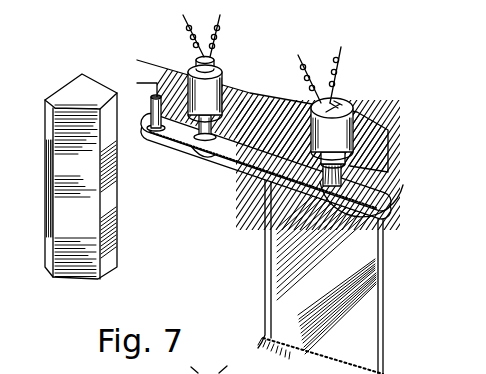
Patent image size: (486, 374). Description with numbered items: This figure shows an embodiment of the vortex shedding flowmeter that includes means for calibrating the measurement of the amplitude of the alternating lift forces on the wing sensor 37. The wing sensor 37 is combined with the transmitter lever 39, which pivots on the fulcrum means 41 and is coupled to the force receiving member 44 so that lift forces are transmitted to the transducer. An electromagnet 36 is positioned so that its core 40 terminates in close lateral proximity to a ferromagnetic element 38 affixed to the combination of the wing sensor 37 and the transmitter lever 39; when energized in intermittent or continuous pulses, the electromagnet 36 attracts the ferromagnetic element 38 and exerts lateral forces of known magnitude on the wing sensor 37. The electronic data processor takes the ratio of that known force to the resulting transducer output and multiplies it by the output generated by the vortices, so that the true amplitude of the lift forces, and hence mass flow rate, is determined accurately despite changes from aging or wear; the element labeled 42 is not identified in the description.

The electromagnet 36 is at (356, 102).
The wing sensor 37 is at (326, 284).
The ferromagnetic element 38 is at (403, 185).
The transmitter lever 39 is at (303, 163).
The core 40 is at (370, 168).
The fulcrum means 41 is at (141, 117).
The pin base 42 is at (218, 136).
The force receiving member 44 is at (204, 124).